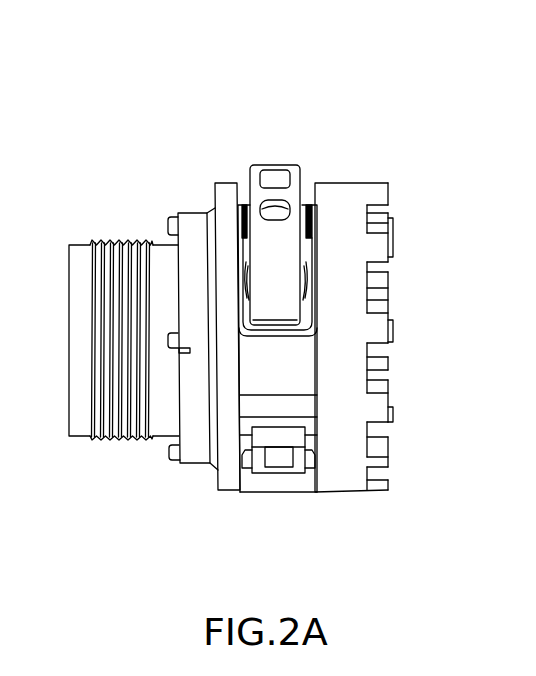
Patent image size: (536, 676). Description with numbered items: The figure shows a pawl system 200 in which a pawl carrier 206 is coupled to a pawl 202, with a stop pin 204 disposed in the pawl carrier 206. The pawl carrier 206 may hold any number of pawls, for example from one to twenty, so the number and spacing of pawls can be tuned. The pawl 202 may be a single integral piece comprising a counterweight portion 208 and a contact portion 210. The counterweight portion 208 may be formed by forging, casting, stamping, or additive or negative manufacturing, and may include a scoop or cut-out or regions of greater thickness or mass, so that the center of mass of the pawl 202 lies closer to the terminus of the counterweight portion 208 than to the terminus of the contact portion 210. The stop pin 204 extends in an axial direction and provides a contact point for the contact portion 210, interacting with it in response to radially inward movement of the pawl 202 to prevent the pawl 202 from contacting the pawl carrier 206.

The pawl system 200 is at (114, 103).
The pawl 202 is at (298, 175).
The stop pin 204 is at (312, 423).
The pawl carrier 206 is at (370, 262).
The counterweight portion 208 is at (292, 305).
The contact portion 210 is at (250, 167).